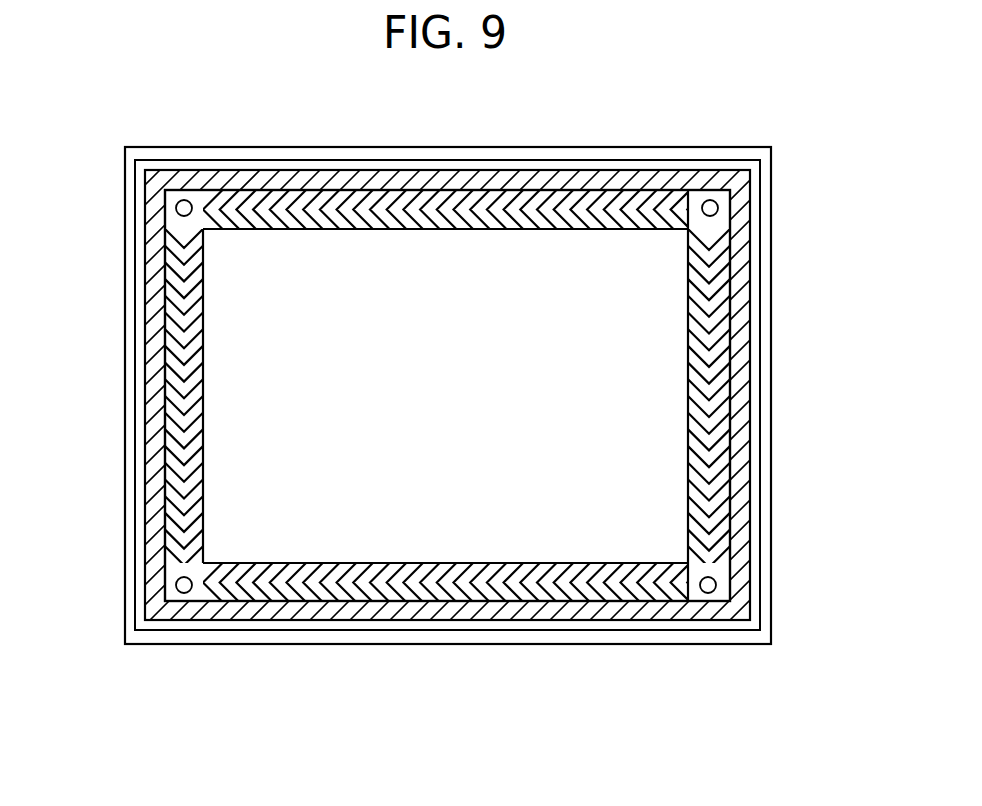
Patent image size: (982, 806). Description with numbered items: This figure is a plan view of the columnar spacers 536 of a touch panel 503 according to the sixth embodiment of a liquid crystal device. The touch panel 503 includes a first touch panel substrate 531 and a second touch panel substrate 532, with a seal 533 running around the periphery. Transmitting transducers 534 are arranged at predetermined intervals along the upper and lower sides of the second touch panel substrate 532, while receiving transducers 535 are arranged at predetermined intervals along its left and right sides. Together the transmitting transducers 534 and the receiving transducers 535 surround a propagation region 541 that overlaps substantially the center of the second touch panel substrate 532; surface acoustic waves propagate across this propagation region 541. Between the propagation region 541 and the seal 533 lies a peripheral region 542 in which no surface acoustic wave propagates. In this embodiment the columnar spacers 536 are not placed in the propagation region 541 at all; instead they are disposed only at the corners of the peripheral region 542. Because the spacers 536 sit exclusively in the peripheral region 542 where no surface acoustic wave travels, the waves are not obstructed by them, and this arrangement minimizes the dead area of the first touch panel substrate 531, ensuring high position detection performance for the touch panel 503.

The touch panel 503 is at (806, 585).
The first touch panel substrate 531 is at (752, 373).
The second touch panel substrate 532 is at (765, 493).
The seal 533 is at (447, 621).
The transmitting transducers 534 is at (232, 190).
The receiving transducers 535 is at (722, 213).
The columnar spacers 536 is at (710, 200).
The propagation region 541 is at (618, 240).
The peripheral region 542 is at (166, 308).